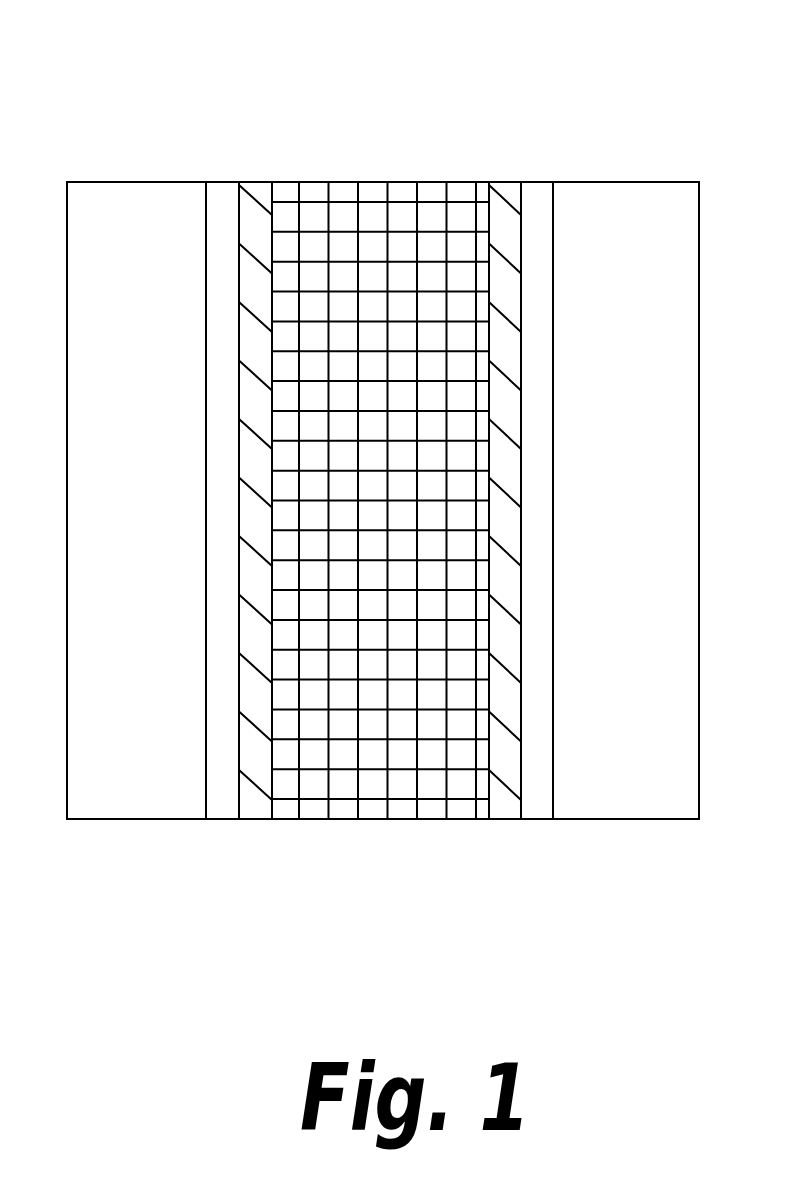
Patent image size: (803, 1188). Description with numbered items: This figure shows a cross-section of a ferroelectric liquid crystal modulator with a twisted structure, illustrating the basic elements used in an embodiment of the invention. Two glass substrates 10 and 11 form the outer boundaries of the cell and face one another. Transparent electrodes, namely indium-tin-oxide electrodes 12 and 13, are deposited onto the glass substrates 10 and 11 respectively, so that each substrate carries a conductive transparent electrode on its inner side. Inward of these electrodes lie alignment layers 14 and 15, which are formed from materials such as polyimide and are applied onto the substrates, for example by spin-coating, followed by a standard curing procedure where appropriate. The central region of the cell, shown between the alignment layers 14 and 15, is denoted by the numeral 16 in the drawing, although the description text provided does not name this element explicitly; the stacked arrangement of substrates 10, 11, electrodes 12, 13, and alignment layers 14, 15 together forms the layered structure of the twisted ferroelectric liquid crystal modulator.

The glass substrate 10 is at (170, 263).
The glass substrate 11 is at (648, 273).
The indium-tin-oxide electrode 12 is at (223, 182).
The indium-tin-oxide electrode 13 is at (535, 182).
The alignment layer 14 is at (257, 821).
The alignment layer 15 is at (500, 821).
The grid/mesh layer 16 is at (382, 821).